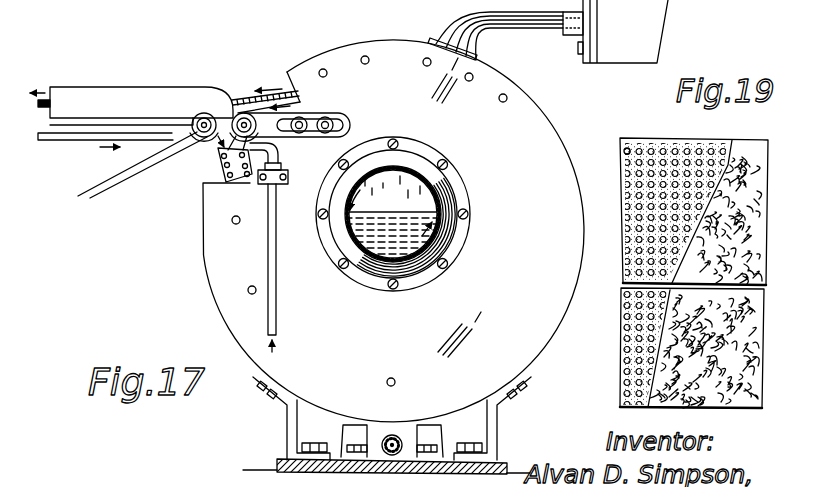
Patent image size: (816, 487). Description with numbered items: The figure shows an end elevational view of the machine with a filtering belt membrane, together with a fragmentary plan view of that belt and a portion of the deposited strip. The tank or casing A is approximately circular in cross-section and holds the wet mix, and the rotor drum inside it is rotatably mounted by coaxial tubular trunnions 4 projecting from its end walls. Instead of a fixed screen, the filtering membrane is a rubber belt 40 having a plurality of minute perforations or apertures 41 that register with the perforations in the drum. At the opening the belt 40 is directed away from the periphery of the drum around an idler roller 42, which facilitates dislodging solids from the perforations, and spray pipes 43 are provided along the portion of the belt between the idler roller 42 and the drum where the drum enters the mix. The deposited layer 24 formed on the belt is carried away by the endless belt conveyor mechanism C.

In FIG. 17, the tank or casing A is at (207, 262).
In FIG. 17, the endless belt conveyor mechanism C is at (102, 92).
In FIG. 17, the tubular trunnions 4 is at (372, 257).
In FIG. 17, the rubber belt 40 is at (243, 104).
In FIG. 19, the rubber belt 40 is at (651, 140).
In FIG. 19, the perforations or apertures 41 is at (630, 173).
In FIG. 17, the idler roller 42 is at (235, 107).
In FIG. 17, the spray pipes 43 is at (218, 165).
In FIG. 19, the deposited layer 24 is at (748, 145).